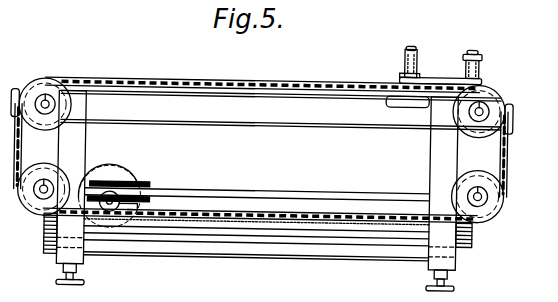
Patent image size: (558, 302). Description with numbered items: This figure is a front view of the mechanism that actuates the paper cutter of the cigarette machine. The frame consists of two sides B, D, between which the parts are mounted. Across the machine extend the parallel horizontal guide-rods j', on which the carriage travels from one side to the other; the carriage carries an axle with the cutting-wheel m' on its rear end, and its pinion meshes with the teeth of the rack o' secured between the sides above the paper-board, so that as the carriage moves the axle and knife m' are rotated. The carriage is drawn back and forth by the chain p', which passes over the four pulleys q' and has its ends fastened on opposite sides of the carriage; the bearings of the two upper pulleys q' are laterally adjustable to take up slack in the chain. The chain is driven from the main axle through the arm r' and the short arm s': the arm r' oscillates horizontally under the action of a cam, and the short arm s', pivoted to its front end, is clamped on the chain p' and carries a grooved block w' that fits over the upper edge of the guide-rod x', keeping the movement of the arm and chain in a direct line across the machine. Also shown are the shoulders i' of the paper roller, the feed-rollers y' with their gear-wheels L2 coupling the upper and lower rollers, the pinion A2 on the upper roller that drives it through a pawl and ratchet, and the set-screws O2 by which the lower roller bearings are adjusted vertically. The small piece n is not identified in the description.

The side of frame B is at (71, 176).
The side of frame D is at (443, 183).
The guide-rod x' is at (281, 110).
The chain p' is at (261, 141).
The pulleys q' is at (269, 147).
The short arm s' is at (441, 65).
The arm r' is at (480, 62).
The grooved block w' is at (407, 107).
The shoulders i' is at (114, 196).
The cutting-wheel m' is at (120, 182).
The pinion n is at (118, 205).
The guide-rods j' is at (257, 186).
The rack o' is at (256, 232).
The feed-rollers y' is at (255, 248).
The gear-wheels L2 is at (45, 224).
The set-screws O2 is at (60, 280).
The pinion A2 is at (474, 234).